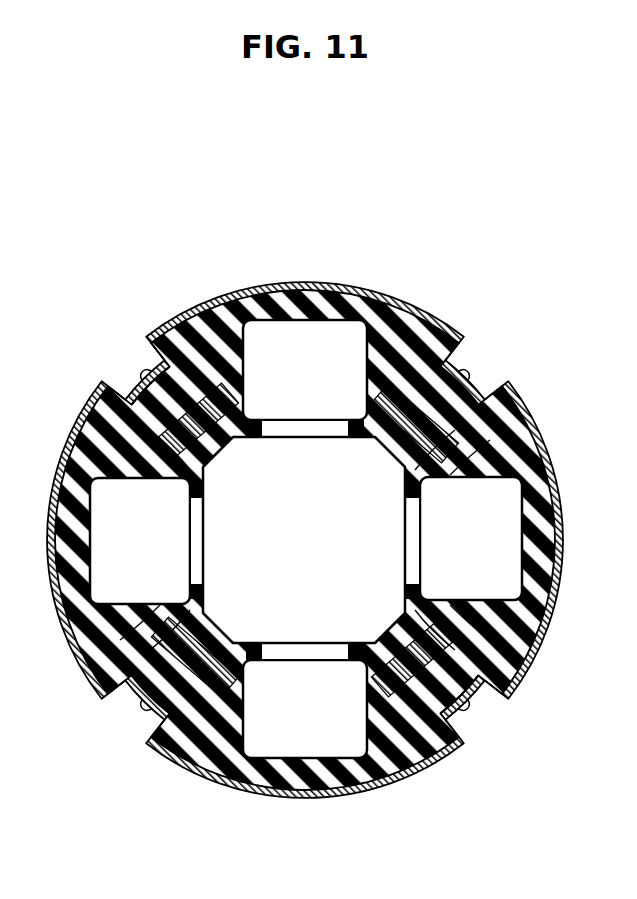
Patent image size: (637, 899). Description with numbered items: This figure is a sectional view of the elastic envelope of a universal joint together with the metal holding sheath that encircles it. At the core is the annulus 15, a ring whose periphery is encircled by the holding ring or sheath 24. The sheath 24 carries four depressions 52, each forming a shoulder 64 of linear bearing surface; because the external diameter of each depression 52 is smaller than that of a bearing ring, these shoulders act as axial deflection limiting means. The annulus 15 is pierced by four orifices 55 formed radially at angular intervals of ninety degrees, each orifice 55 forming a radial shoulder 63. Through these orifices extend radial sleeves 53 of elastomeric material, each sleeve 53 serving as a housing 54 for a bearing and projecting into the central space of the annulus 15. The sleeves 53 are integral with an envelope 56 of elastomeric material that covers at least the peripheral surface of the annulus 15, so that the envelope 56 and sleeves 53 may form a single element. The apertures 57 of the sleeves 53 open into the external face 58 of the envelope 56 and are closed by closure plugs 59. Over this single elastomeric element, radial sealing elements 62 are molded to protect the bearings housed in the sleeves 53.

The annulus 15 is at (147, 377).
The holding sheath 24 is at (58, 496).
The depression 52 is at (140, 380).
The radial sleeve 53 is at (172, 478).
The housing 54 is at (267, 377).
The orifice 55 is at (160, 337).
The envelope 56 is at (190, 333).
The aperture 57 is at (242, 305).
The external face 58 is at (212, 320).
The closure plug 59 is at (275, 276).
The radial sealing element 62 is at (192, 506).
The radial shoulder 63 is at (190, 633).
The shoulder 64 is at (463, 368).